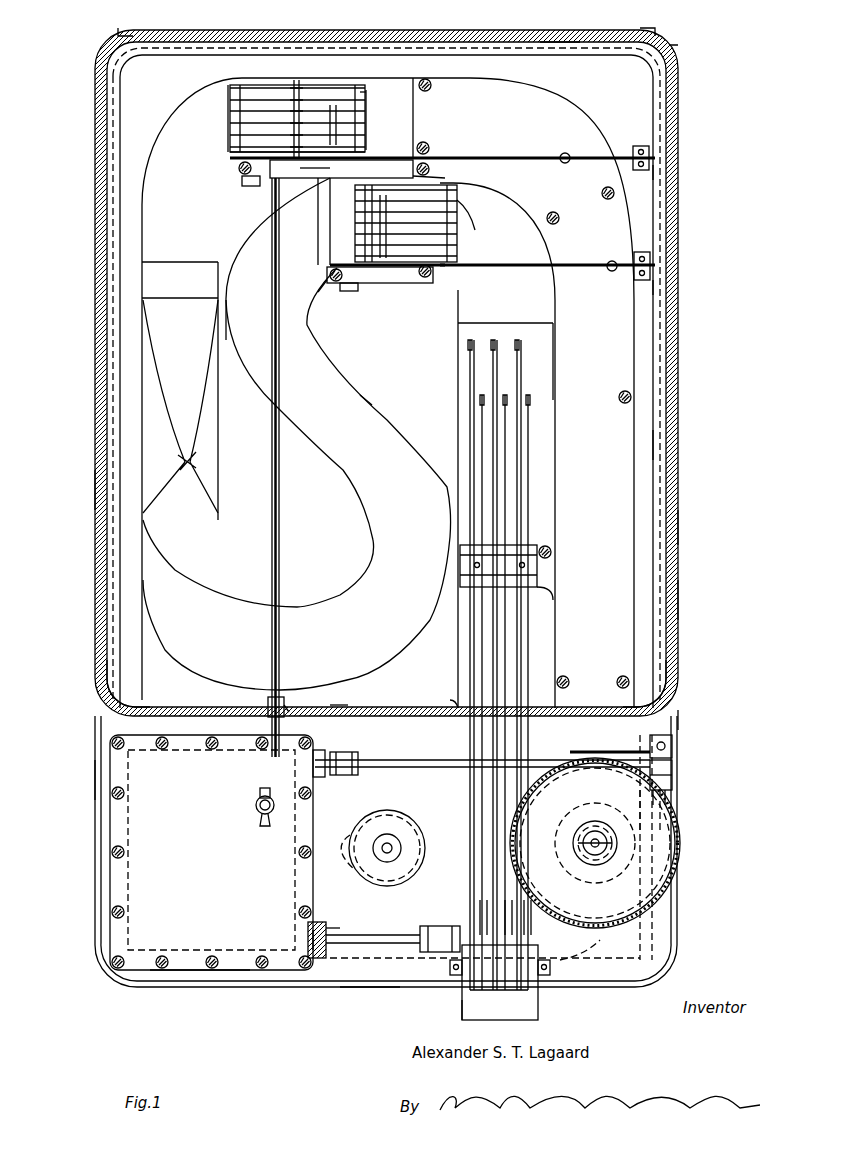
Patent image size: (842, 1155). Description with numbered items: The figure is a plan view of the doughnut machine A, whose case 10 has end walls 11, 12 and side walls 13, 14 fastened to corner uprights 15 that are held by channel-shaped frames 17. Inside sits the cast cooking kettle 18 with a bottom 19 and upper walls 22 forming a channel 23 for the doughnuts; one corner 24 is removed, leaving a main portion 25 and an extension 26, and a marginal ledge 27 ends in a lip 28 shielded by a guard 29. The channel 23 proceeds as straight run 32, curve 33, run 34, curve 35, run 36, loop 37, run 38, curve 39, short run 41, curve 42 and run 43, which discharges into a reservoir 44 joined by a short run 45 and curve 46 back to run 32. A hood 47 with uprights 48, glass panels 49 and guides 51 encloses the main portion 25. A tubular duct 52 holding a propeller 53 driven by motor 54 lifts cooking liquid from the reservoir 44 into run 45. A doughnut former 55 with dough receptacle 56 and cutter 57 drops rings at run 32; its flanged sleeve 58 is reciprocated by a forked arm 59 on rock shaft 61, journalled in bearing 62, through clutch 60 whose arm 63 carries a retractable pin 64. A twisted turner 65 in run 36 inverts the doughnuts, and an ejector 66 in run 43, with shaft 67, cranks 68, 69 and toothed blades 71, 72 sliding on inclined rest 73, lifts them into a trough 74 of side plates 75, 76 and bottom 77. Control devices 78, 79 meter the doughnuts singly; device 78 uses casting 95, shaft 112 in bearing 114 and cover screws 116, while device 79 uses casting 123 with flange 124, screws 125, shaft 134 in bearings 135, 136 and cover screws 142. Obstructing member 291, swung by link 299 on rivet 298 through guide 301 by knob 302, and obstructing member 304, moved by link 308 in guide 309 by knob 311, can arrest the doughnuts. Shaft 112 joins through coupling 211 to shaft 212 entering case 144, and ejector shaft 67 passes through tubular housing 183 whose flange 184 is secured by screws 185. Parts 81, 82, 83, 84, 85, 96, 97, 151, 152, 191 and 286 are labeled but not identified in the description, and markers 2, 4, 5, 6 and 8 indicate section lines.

The case 10 is at (95, 720).
The end wall 11 is at (556, 45).
The end wall 12 is at (375, 987).
The side wall 13 is at (675, 757).
The side wall 14 is at (95, 775).
The uprights 15 is at (93, 60).
The upper and lower frames 17 is at (118, 662).
The cooking kettle 18 is at (366, 397).
The bottom 19 is at (377, 557).
The upper walls 22 is at (536, 206).
The channel 23 is at (332, 446).
The removed corner 24 is at (338, 705).
The main portion 25 is at (672, 386).
The extension 26 is at (380, 706).
The ledge 27 is at (434, 60).
The lip 28 is at (662, 232).
The guard 29 is at (652, 270).
The straight run 32 is at (655, 447).
The curve 33 is at (546, 162).
The straight run 34 is at (462, 88).
The curve 35 is at (182, 128).
The straight run 36 is at (142, 237).
The loop 37 is at (196, 652).
The straight run 38 is at (340, 382).
The curve 39 is at (236, 247).
The short straight run 41 is at (425, 160).
The curve 42 is at (520, 250).
The straight run 43 is at (555, 482).
The reservoir 44 is at (455, 702).
The short run 45 is at (366, 956).
The curve 46 is at (590, 942).
The hood 47 is at (678, 602).
The uprights 48 is at (100, 690).
The glass panels 49 is at (96, 489).
The guides 51 is at (645, 690).
The vertical tubular duct 52 is at (390, 812).
The propeller or elevator 53 is at (342, 867).
The motor 54 is at (376, 882).
The doughnut former 55 is at (678, 860).
The receptacle 56 is at (680, 837).
The cutter 57 is at (590, 862).
The flanged sleeve 58 is at (596, 868).
The forked arm 59 is at (662, 817).
The clutch 60 is at (612, 754).
The rock shaft 61 is at (391, 760).
The bearing 62 is at (672, 746).
The arm 63 is at (673, 764).
The retractable pin 64 is at (673, 772).
The twisted tubular turner 65 is at (135, 412).
The ejector 66 is at (535, 617).
The shaft 67 is at (318, 962).
The crank 68 is at (476, 922).
The crank 69 is at (522, 950).
The toothed blades 71 is at (513, 340).
The toothed blades 72 is at (525, 441).
The inclined rest 73 is at (530, 372).
The trough 74 is at (461, 976).
The side plate 75 is at (462, 1012).
The side plate 76 is at (539, 1006).
The bottom 77 is at (500, 1003).
The control device 78 is at (231, 134).
The control device 79 is at (470, 263).
The upper spool 81 is at (341, 90).
The spool flange 82 is at (250, 84).
The spool end 83 is at (366, 95).
The spool flange 84 is at (372, 95).
The spring 85 is at (292, 86).
The casting 95 is at (318, 181).
The bar 96 is at (480, 167).
The screw 97 is at (412, 160).
The shaft 112 is at (272, 530).
The bearing 114 is at (243, 164).
The screws 116 is at (412, 169).
The casting 123 is at (445, 270).
The flange 124 is at (326, 288).
The screws 125 is at (330, 272).
The shaft 134 is at (440, 178).
The bearing 135 is at (378, 285).
The bearing 136 is at (340, 178).
The screws 142 is at (331, 302).
The case 144 is at (196, 962).
The cover plate 151 is at (142, 887).
The screws 152 is at (120, 797).
The tubular housing 183 is at (424, 953).
The flange 184 is at (314, 938).
The screws 185 is at (327, 927).
The coupling 191 is at (356, 755).
The coupling 211 is at (268, 706).
The shaft 212 is at (281, 706).
The key 286 is at (259, 797).
The obstructing member 291 is at (365, 122).
The rivet 298 is at (270, 166).
The link 299 is at (623, 162).
The guide 301 is at (650, 150).
The knob 302 is at (561, 156).
The obstructing member 304 is at (365, 246).
The link 308 is at (573, 276).
The guide 309 is at (652, 290).
The knob 311 is at (611, 272).
The section line 2 is at (210, 100).
The section line 4 is at (206, 165).
The section line 5 is at (300, 24).
The section line 6 is at (333, 195).
The section line 8 is at (270, 736).
The doughnut machine A is at (679, 721).